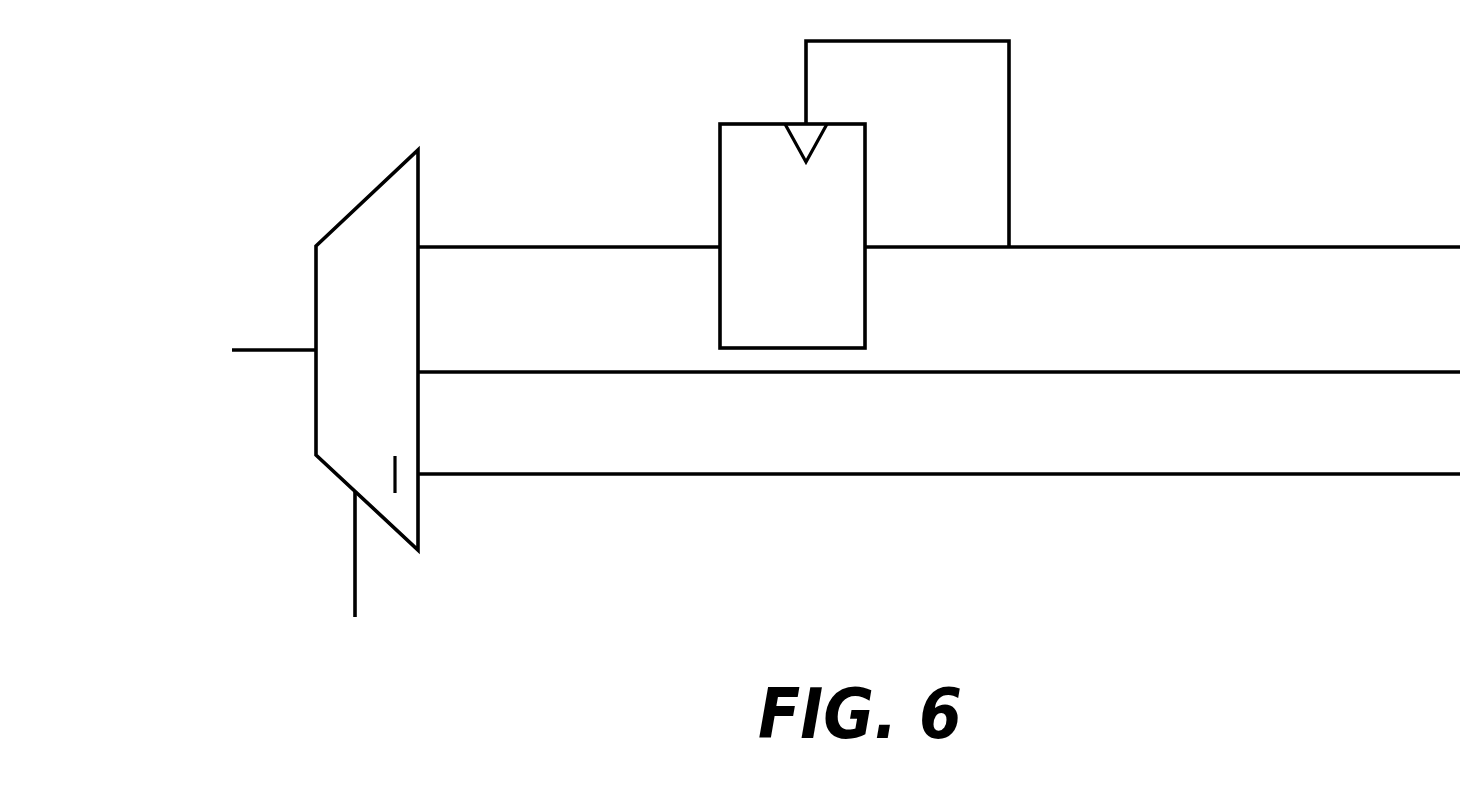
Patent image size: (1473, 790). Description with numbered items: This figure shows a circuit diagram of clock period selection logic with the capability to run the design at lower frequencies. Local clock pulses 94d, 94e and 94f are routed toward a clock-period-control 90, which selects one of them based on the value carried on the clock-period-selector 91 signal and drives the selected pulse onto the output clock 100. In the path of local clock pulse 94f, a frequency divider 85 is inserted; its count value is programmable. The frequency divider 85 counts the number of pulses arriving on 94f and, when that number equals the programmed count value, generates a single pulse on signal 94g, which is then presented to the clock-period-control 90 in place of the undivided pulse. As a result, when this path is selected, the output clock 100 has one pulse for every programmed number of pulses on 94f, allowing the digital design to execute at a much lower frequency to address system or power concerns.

The clock-period-control 90 is at (373, 191).
The output clock 100 is at (257, 349).
The clock-period-selector 91 is at (355, 585).
The frequency divider output signal 94g is at (620, 246).
The frequency divider 85 is at (836, 322).
The local clock pulse 94f is at (1377, 246).
The local clock pulse 94e is at (1412, 371).
The local clock pulse 94d is at (1360, 473).